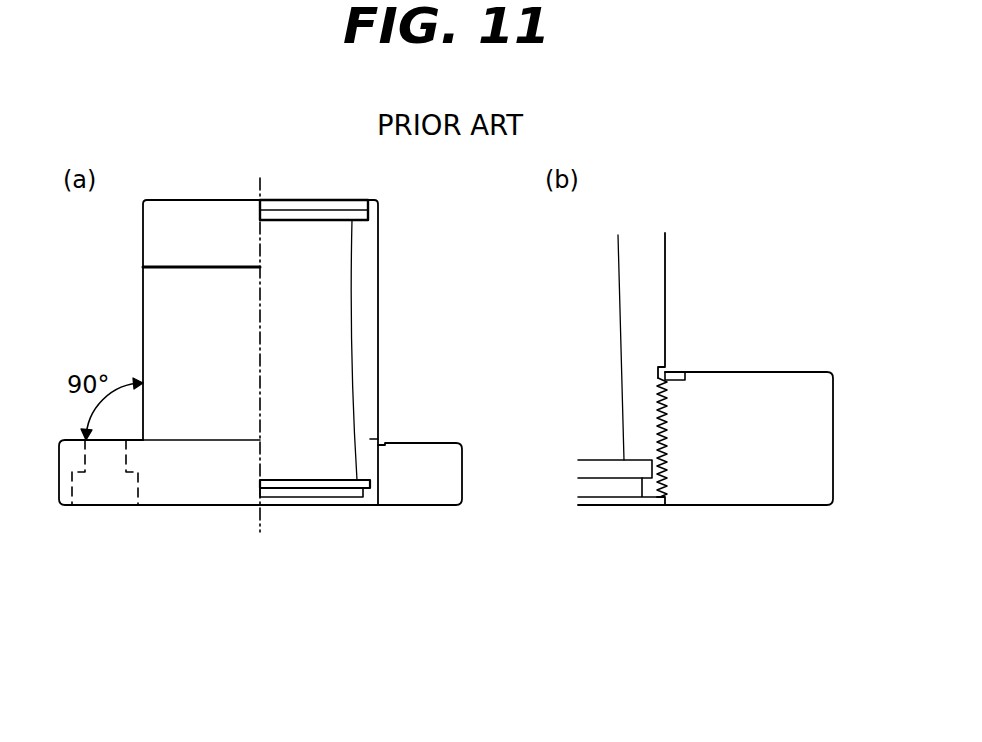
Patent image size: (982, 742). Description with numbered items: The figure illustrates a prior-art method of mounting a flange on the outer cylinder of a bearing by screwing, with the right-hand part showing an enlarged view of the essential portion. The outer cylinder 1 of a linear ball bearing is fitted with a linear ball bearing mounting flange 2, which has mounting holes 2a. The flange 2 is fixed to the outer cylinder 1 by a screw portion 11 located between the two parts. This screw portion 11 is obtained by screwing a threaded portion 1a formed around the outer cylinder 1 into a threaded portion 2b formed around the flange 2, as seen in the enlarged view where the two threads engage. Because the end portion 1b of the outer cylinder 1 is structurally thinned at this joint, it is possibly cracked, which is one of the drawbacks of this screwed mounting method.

The outer cylinder 1 is at (157, 298).
The threaded portion 1a is at (660, 393).
The end portion 1b is at (336, 487).
The linear ball bearing mounting flange 2 is at (220, 495).
The mounting holes 2a is at (108, 495).
The threaded portion 2b is at (668, 463).
The screw portion 11 is at (667, 425).